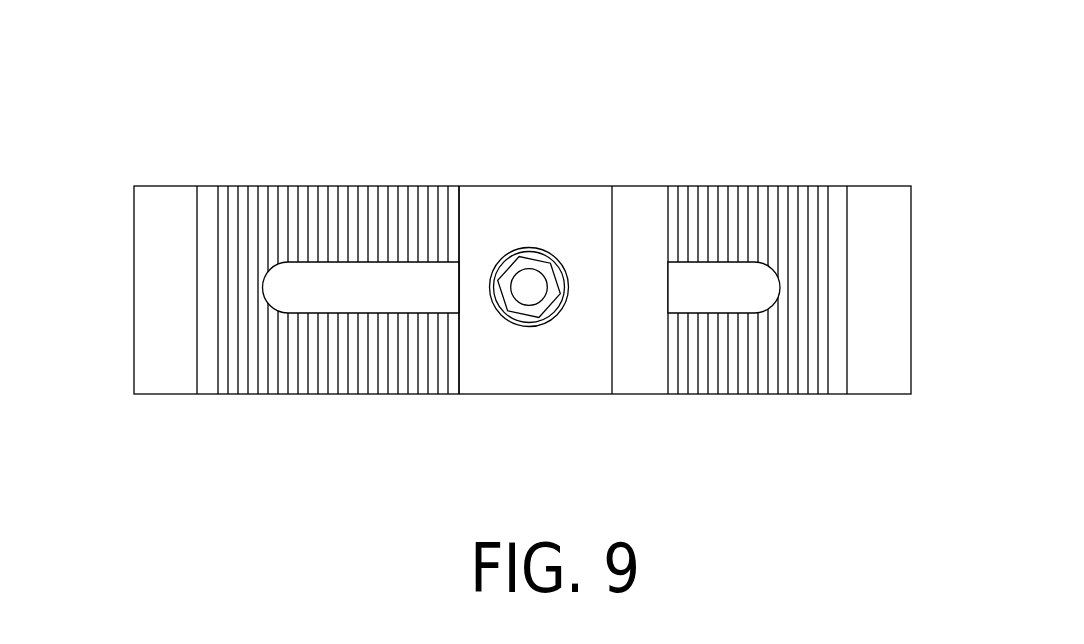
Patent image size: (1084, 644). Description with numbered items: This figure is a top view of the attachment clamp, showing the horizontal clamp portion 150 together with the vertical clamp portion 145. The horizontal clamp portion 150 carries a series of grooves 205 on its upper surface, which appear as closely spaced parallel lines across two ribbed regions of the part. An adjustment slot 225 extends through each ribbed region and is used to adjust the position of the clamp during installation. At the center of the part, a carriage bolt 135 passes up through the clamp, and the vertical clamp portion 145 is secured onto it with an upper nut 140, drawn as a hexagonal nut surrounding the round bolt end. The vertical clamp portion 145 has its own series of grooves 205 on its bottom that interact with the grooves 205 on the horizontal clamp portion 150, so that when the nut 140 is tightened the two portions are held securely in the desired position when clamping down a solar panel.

The carriage bolt 135 is at (523, 283).
The nut 140 is at (550, 269).
The vertical clamp portion 145 is at (637, 381).
The horizontal clamp portion 150 is at (166, 380).
The grooves 205 is at (285, 212).
The adjustment slot 225 is at (735, 285).